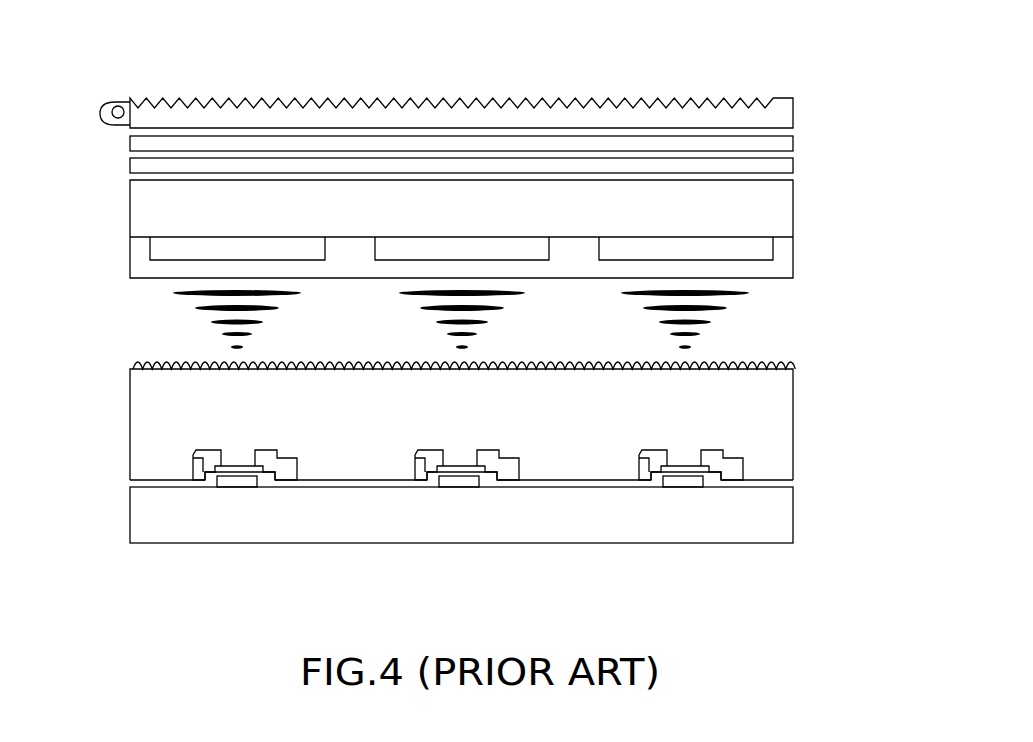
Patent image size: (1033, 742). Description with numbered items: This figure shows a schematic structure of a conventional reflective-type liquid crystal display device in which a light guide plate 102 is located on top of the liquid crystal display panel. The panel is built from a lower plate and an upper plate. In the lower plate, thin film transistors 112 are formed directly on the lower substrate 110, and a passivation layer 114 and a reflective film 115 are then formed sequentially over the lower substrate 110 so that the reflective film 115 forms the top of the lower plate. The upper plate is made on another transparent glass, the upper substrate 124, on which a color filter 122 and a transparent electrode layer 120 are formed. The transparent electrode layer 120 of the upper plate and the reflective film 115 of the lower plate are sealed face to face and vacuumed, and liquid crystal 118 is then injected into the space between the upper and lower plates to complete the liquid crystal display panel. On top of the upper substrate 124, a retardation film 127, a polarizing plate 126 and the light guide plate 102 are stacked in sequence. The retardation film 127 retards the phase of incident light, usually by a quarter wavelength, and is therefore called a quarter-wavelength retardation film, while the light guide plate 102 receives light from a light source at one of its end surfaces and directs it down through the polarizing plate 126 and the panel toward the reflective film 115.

The light guide plate 102 is at (733, 118).
The polarizing plate 126 is at (776, 146).
The retardation film 127 is at (777, 167).
The upper substrate 124 is at (768, 214).
The transparent electrode layer 120 is at (784, 261).
The color filter 122 is at (713, 248).
The liquid crystal 118 is at (188, 320).
The reflective film 115 is at (793, 364).
The passivation layer 114 is at (762, 411).
The thin film transistors 112 is at (733, 459).
The lower substrate 110 is at (762, 507).